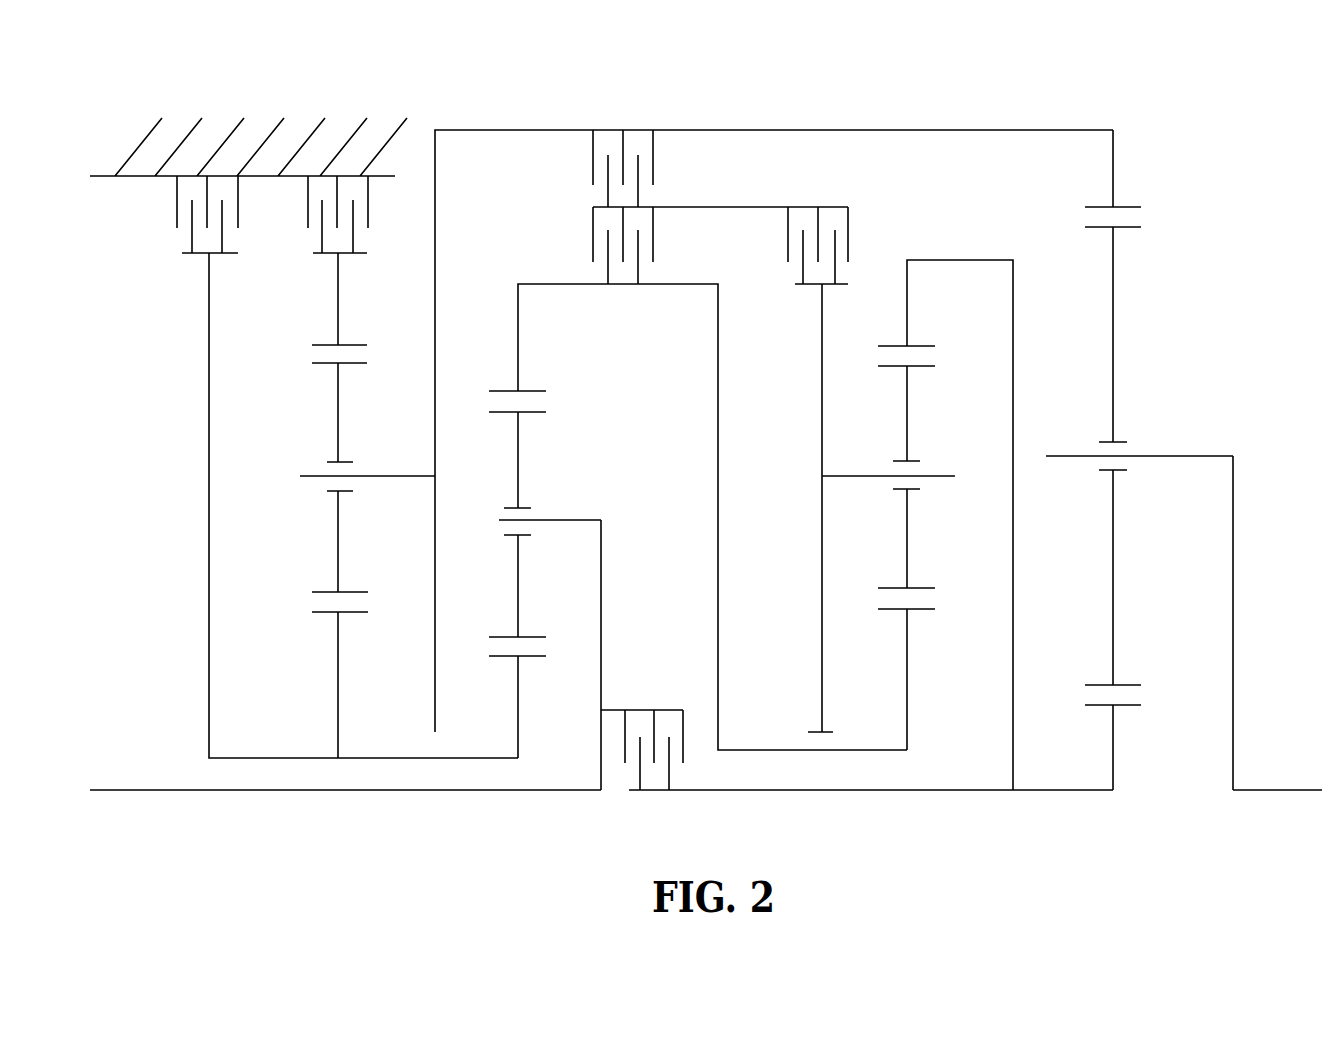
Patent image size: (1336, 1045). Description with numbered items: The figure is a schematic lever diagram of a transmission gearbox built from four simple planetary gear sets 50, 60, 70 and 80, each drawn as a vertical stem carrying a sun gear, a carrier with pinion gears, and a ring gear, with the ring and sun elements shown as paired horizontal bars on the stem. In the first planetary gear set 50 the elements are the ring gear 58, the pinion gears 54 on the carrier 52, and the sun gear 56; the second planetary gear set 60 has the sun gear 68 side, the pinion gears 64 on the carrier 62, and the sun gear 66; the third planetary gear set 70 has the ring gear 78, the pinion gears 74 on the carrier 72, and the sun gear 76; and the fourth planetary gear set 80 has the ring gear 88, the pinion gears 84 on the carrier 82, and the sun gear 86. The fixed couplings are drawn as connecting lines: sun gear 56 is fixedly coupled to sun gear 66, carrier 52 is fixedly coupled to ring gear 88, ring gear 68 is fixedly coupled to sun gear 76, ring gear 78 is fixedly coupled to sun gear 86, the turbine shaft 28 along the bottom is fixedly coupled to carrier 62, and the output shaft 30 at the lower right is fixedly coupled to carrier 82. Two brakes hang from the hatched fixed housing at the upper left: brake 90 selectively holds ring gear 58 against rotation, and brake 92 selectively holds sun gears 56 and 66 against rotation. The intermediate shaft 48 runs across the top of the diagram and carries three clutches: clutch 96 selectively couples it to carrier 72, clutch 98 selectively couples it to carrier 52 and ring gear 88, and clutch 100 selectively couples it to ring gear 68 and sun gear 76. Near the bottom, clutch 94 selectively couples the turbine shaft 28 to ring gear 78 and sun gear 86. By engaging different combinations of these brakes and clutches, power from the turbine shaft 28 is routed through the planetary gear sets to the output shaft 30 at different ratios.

The turbine shaft 28 is at (200, 790).
The output shaft 30 is at (1273, 790).
The intermediate shaft 48 is at (705, 207).
The planetary gear set 50 is at (385, 803).
The carrier 52 is at (435, 298).
The pinion gears of first planetary gear set 54 is at (338, 430).
The sun gear 56 is at (338, 677).
The ring gear 58 is at (338, 278).
The planetary gear set 60 is at (560, 803).
The carrier 62 is at (601, 612).
The pinion gears of second planetary gear set 64 is at (518, 478).
The sun gear 66 is at (518, 720).
The ring gear 68 is at (518, 327).
The planetary gear set 70 is at (958, 803).
The carrier 72 is at (822, 388).
The pinion gears of third planetary gear set 74 is at (907, 432).
The sun gear 76 is at (907, 673).
The ring gear 78 is at (907, 278).
The planetary gear set 80 is at (1162, 803).
The carrier 82 is at (1233, 622).
The pinion gears of fourth planetary gear set 84 is at (1113, 293).
The sun gear 86 is at (1113, 770).
The ring gear 88 is at (1113, 142).
The brake 90 is at (308, 202).
The brake 92 is at (177, 202).
The clutch 94 is at (617, 707).
The clutch 96 is at (803, 207).
The clutch 98 is at (593, 148).
The clutch 100 is at (593, 248).